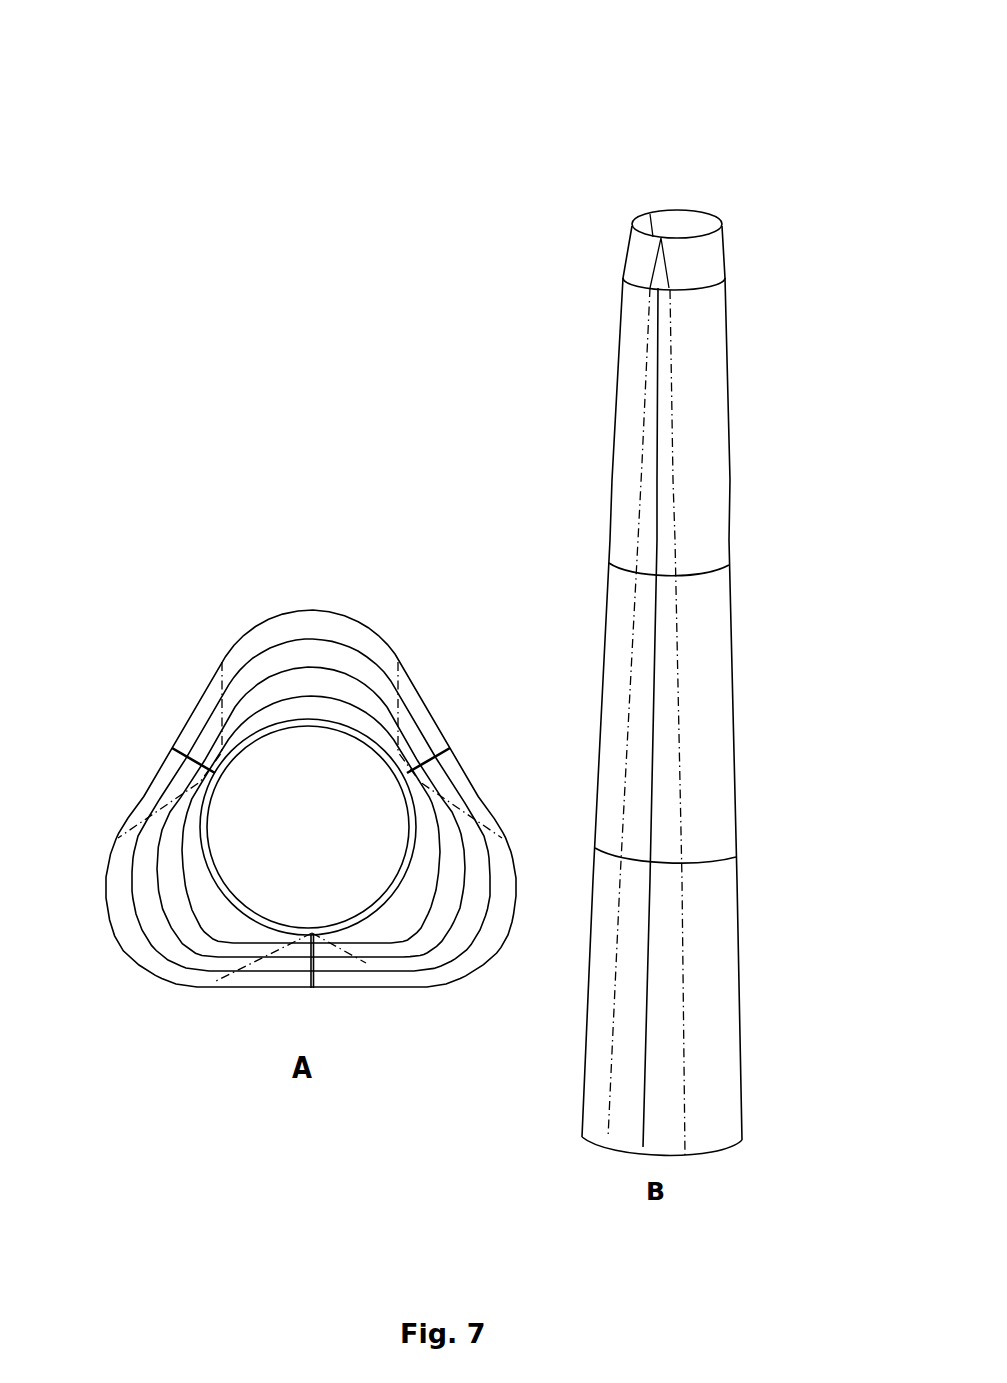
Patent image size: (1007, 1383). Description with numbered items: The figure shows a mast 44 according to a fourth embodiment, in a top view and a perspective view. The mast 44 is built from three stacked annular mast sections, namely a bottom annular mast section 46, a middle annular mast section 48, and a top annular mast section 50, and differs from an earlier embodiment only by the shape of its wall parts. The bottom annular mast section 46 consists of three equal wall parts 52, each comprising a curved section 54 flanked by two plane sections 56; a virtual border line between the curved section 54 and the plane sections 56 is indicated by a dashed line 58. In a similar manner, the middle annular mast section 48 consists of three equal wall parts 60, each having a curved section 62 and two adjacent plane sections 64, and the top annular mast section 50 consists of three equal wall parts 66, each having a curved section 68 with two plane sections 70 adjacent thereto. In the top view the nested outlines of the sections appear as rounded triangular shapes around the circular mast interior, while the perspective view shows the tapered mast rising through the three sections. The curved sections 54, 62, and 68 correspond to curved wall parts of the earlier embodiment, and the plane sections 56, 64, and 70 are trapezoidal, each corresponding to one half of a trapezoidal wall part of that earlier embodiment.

In FIG. 7A, the mast 44 is at (298, 502).
In FIG. 7B, the mast 44 is at (668, 117).
In FIG. 7B, the bottom annular mast section 46 is at (763, 995).
In FIG. 7B, the middle annular mast section 48 is at (755, 757).
In FIG. 7B, the top annular mast section 50 is at (738, 453).
In FIG. 7A, the wall part 52 is at (338, 627).
In FIG. 7B, the wall part 52 is at (743, 1107).
In FIG. 7A, the curved section 54 is at (437, 972).
In FIG. 7B, the curved section 54 is at (710, 1118).
In FIG. 7A, the plane section 56 is at (387, 977).
In FIG. 7B, the plane section 56 is at (668, 1135).
In FIG. 7B, the dashed line 58 is at (682, 938).
In FIG. 7A, the wall part 60 is at (358, 667).
In FIG. 7B, the wall part 60 is at (732, 692).
In FIG. 7A, the curved section 62 is at (450, 933).
In FIG. 7B, the curved section 62 is at (718, 645).
In FIG. 7A, the plane section 64 is at (342, 962).
In FIG. 7B, the plane section 64 is at (663, 618).
In FIG. 7A, the wall part 66 is at (368, 705).
In FIG. 7B, the wall part 66 is at (730, 399).
In FIG. 7A, the curved section 68 is at (446, 886).
In FIG. 7B, the curved section 68 is at (715, 342).
In FIG. 7A, the plane section 70 is at (314, 988).
In FIG. 7B, the plane section 70 is at (662, 393).